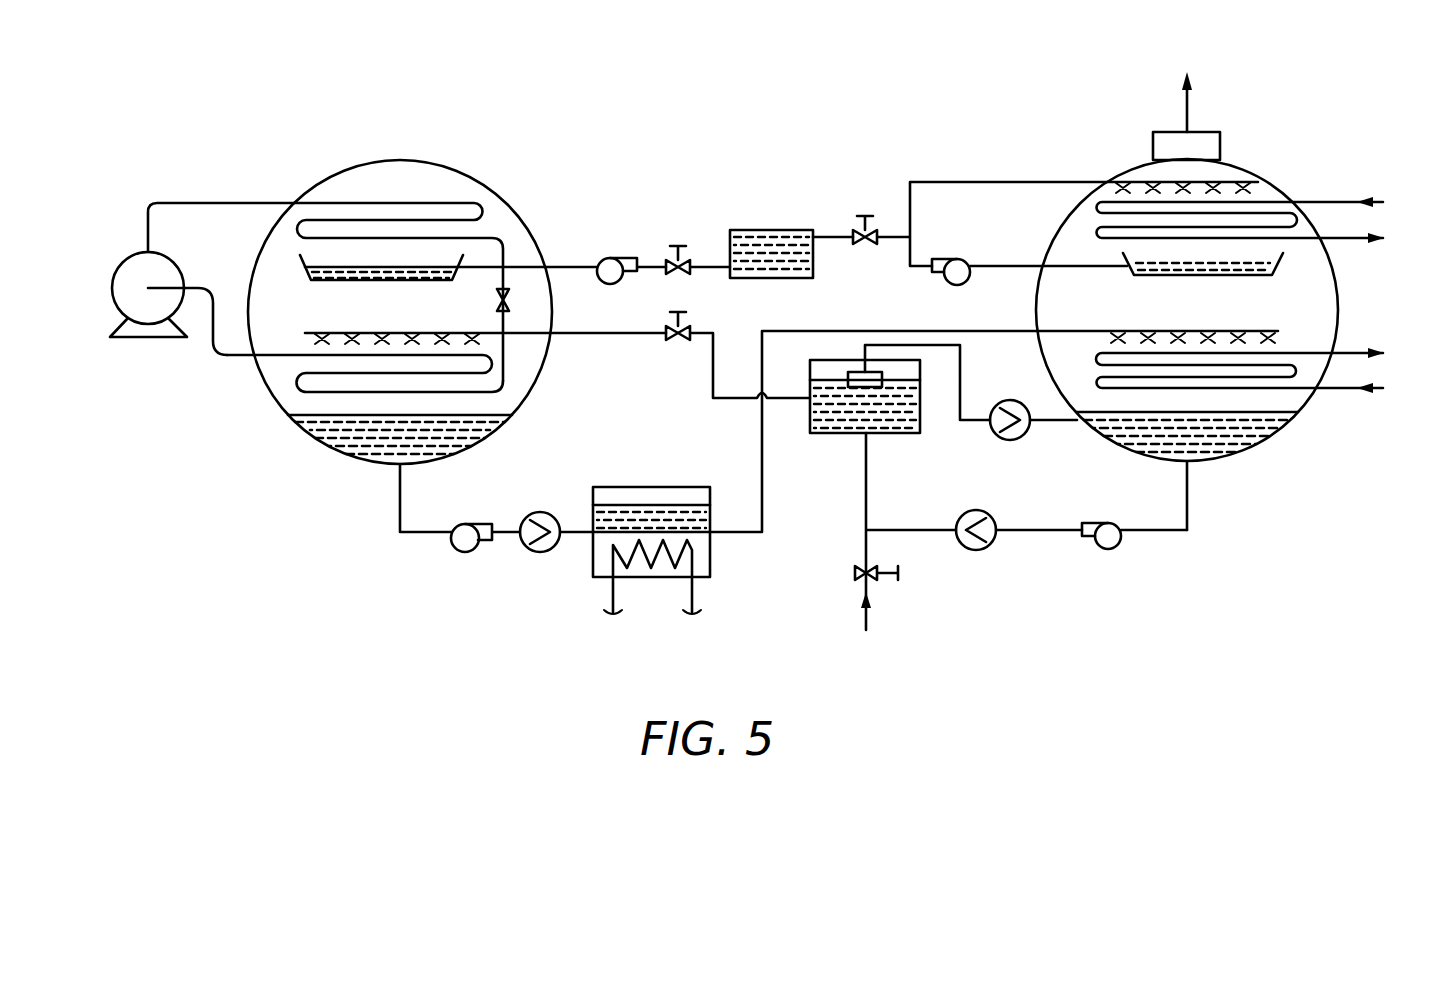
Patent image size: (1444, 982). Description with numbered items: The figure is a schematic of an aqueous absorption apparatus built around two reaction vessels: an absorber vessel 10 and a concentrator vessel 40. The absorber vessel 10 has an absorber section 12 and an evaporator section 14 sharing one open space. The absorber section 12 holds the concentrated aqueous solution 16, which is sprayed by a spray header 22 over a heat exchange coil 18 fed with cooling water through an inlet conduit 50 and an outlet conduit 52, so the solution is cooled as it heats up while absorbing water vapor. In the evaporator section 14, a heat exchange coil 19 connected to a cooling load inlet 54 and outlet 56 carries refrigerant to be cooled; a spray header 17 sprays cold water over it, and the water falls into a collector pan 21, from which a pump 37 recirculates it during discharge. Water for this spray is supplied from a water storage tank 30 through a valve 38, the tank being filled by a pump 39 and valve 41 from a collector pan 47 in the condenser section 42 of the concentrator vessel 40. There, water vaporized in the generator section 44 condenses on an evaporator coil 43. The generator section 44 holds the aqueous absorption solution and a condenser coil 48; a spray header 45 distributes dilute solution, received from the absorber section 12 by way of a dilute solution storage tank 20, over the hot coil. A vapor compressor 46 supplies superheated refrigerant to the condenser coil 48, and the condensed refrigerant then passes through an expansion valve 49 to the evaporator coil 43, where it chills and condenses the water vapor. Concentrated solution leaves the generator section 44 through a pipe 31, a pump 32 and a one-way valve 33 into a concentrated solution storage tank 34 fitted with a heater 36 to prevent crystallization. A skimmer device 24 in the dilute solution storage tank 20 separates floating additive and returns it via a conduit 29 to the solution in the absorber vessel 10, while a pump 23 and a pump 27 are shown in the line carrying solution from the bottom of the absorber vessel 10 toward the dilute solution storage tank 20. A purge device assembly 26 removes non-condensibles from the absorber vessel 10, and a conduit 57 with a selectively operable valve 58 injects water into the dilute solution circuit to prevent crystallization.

The absorber vessel 10 is at (1340, 302).
The absorber section 12 is at (1321, 418).
The evaporator section 14 is at (1303, 148).
The concentrated aqueous solution 16 is at (1229, 432).
The spray header 17 is at (1141, 183).
The heat exchange coil 18 is at (1100, 358).
The heat exchange coil 19 is at (1100, 212).
The dilute solution storage tank 20 is at (886, 433).
The collector pan 21 is at (1276, 271).
The spray header 22 is at (1224, 330).
The pump 23 is at (1100, 548).
The skimmer device 24 is at (859, 370).
The purge device assembly 26 is at (1205, 130).
The pump 27 is at (972, 552).
The conduit 29 is at (963, 422).
The water storage tank 30 is at (790, 230).
The pipe 31 is at (400, 490).
The pump 32 is at (462, 553).
The one-way valve 33 is at (537, 553).
The concentrated solution storage tank 34 is at (712, 548).
The heater 36 is at (608, 578).
The pump 37 is at (956, 286).
The valve 38 is at (870, 248).
The pump 39 is at (619, 257).
The concentrator vessel 40 is at (366, 162).
The valve 41 is at (668, 265).
The condenser section 42 is at (514, 180).
The evaporator coil 43 is at (300, 233).
The generator section 44 is at (562, 380).
The spray header 45 is at (421, 330).
The vapor compressor 46 is at (110, 310).
The collector pan 47 is at (300, 267).
The condenser coil 48 is at (297, 385).
The expansion valve 49 is at (510, 300).
The inlet conduit 50 is at (1336, 392).
The outlet conduit 52 is at (1346, 352).
The cooling load inlet 54 is at (1336, 200).
The cooling load outlet 56 is at (1336, 240).
The conduit 57 is at (862, 557).
The selectively operable valve 58 is at (873, 580).